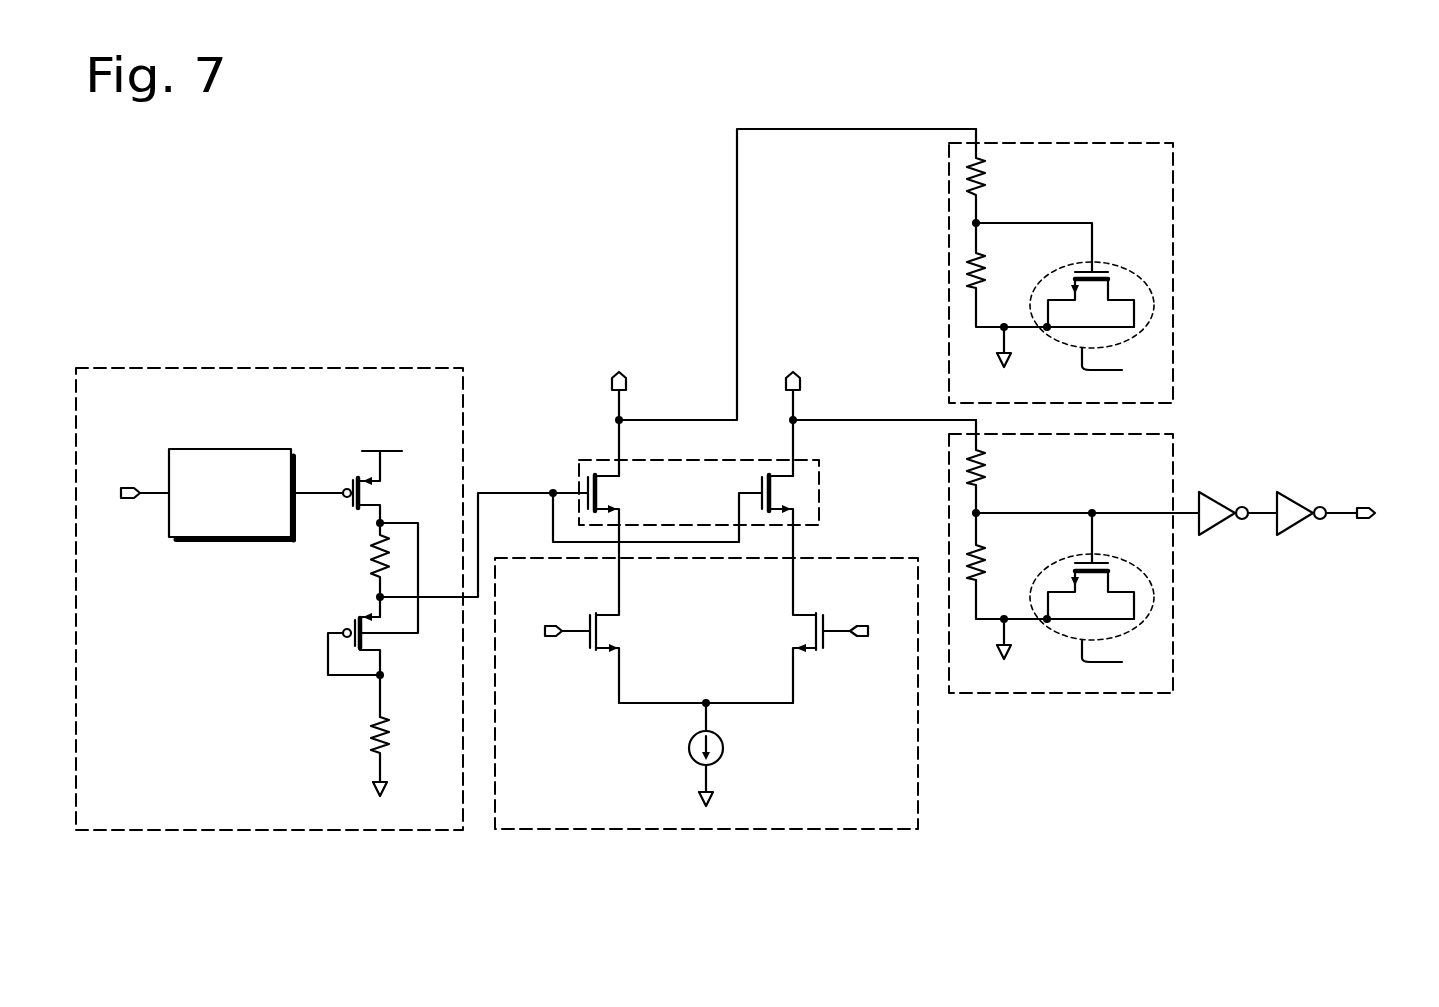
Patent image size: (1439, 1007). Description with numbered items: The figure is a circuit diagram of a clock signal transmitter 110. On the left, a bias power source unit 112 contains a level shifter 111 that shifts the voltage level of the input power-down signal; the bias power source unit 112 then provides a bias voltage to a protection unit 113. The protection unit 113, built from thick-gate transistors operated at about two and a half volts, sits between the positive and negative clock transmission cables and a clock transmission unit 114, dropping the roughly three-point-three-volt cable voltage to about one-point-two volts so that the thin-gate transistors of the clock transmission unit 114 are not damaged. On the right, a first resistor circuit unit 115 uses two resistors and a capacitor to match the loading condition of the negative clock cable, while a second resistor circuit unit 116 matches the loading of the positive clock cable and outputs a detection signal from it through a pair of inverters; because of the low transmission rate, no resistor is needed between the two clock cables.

The clock signal transmitter 110 is at (260, 216).
The level shifter 111 is at (245, 449).
The bias power source unit 112 is at (352, 368).
The protection unit 113 is at (819, 497).
The clock transmission unit 114 is at (918, 785).
The first resistor circuit unit 115 is at (1173, 356).
The second resistor circuit unit 116 is at (1173, 648).